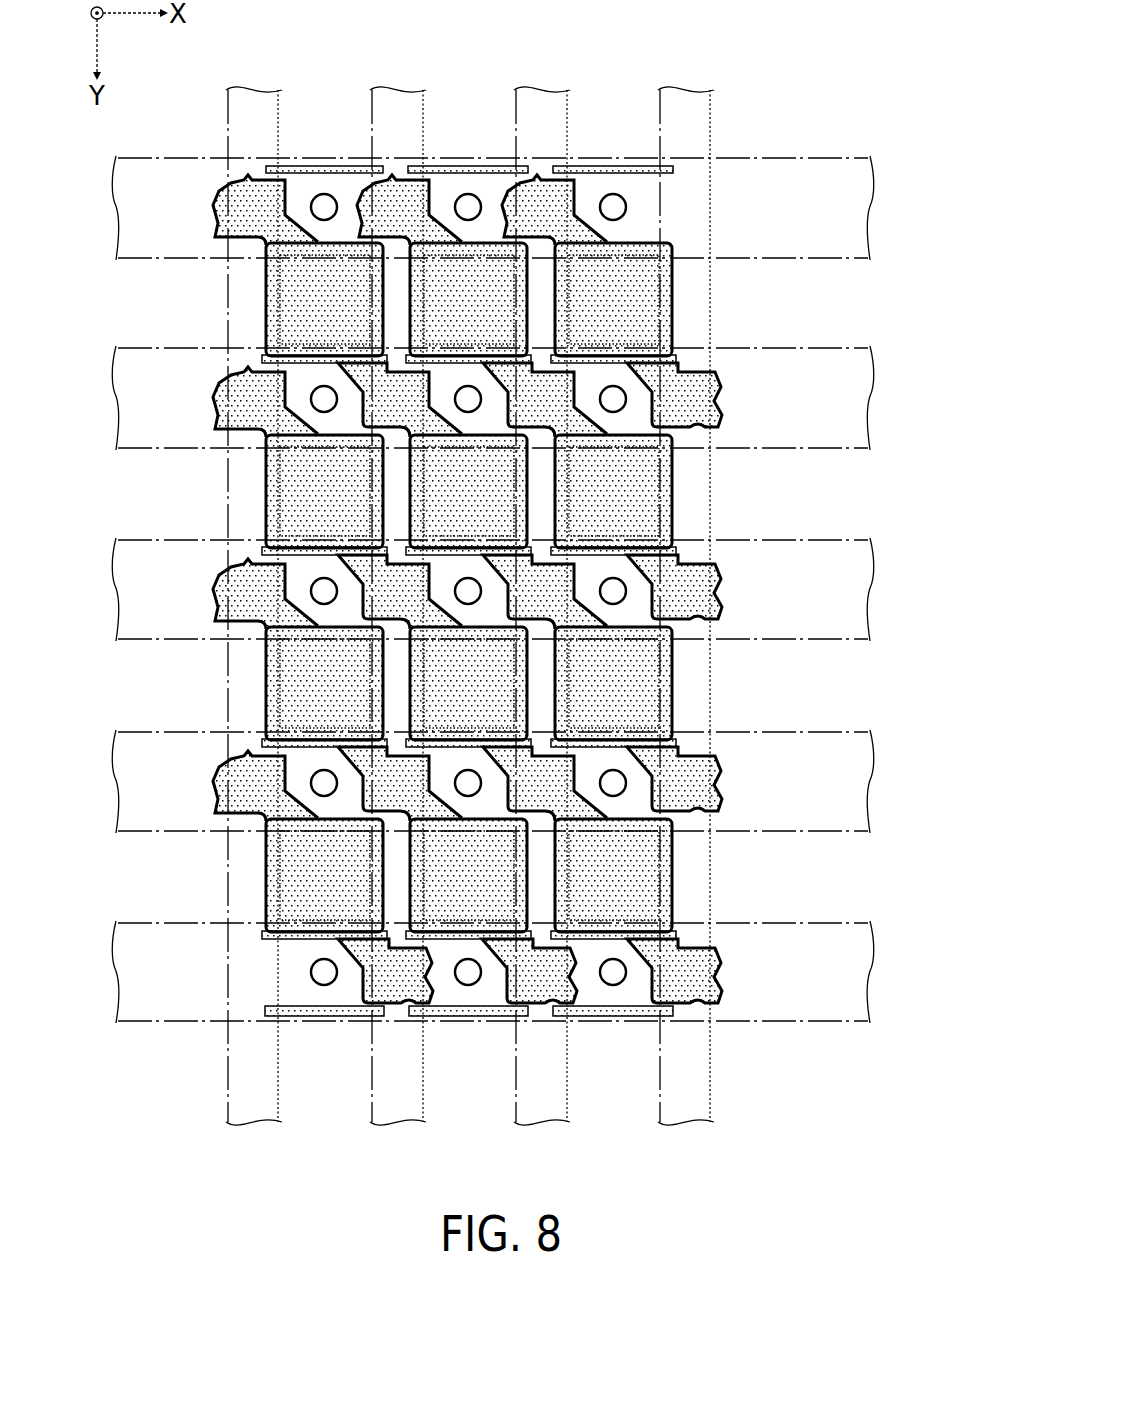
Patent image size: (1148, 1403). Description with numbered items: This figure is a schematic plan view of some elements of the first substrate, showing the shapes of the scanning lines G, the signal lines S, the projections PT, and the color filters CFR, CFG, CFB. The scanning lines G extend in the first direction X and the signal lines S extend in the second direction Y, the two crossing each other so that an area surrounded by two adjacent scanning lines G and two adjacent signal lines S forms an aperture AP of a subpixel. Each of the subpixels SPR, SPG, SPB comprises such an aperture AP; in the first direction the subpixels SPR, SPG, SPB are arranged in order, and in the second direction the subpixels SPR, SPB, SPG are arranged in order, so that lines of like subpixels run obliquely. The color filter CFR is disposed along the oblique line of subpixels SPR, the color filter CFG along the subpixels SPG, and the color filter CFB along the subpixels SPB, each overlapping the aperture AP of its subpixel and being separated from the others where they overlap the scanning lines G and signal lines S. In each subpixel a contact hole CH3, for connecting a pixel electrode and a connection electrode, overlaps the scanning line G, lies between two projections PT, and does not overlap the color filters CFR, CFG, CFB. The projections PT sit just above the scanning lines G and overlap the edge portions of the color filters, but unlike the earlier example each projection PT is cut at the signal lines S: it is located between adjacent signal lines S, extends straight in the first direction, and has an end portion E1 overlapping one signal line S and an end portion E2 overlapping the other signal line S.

The scanning line G is at (900, 975).
The signal line S is at (680, 1125).
The projection PT is at (302, 166).
The subpixel SPR is at (469, 587).
The subpixel SPG is at (469, 587).
The subpixel SPB is at (469, 587).
The aperture AP is at (282, 283).
The contact hole CH3 is at (613, 194).
The color filter CFR is at (346, 810).
The color filter CFG is at (346, 618).
The color filter CFB is at (346, 426).
The end portion E1 is at (268, 166).
The end portion E2 is at (408, 166).